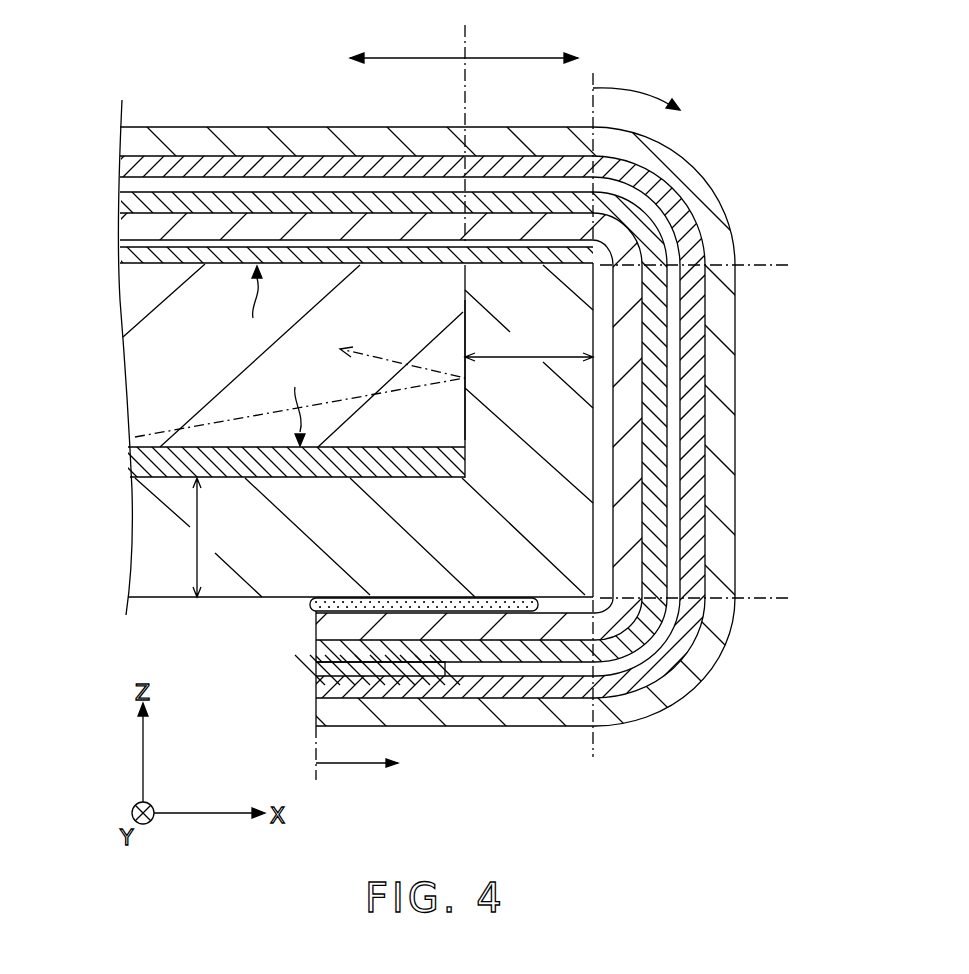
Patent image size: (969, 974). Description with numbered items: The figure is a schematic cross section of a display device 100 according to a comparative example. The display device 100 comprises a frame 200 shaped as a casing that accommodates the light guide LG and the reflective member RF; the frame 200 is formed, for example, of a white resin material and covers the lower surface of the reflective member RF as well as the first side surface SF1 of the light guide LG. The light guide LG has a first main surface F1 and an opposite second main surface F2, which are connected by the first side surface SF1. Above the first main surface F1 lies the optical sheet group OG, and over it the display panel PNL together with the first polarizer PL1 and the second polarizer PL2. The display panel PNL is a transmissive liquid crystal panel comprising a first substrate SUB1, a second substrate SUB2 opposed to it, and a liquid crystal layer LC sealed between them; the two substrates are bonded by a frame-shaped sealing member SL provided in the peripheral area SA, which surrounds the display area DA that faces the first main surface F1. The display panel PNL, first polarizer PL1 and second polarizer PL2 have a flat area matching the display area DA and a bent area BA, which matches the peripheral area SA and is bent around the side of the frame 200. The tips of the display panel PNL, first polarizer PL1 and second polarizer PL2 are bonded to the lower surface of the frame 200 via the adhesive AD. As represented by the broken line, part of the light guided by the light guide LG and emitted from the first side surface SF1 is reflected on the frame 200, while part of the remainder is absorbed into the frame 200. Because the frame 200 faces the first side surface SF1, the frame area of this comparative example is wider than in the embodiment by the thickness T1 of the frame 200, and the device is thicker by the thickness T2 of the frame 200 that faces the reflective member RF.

The display device 100 is at (484, 387).
The frame 200 is at (158, 532).
The display panel PNL is at (484, 387).
The first polarizer PL1 is at (132, 227).
The second polarizer PL2 is at (130, 139).
The first substrate SUB1 is at (190, 205).
The second substrate SUB2 is at (153, 168).
The liquid crystal layer LC is at (163, 190).
The optical sheet group OG is at (222, 265).
The light guide LG is at (140, 380).
The reflective member RF is at (133, 462).
The adhesive AD is at (311, 606).
The sealing member SL is at (322, 668).
The first side surface SF1 is at (450, 336).
The first main surface F1 is at (256, 305).
The second main surface F2 is at (297, 404).
The thickness of the frame facing the first side surface T1 is at (529, 344).
The thickness of the frame facing the reflective member T2 is at (211, 537).
The display area DA is at (407, 47).
The peripheral area SA is at (447, 417).
The bent area BA is at (636, 88).